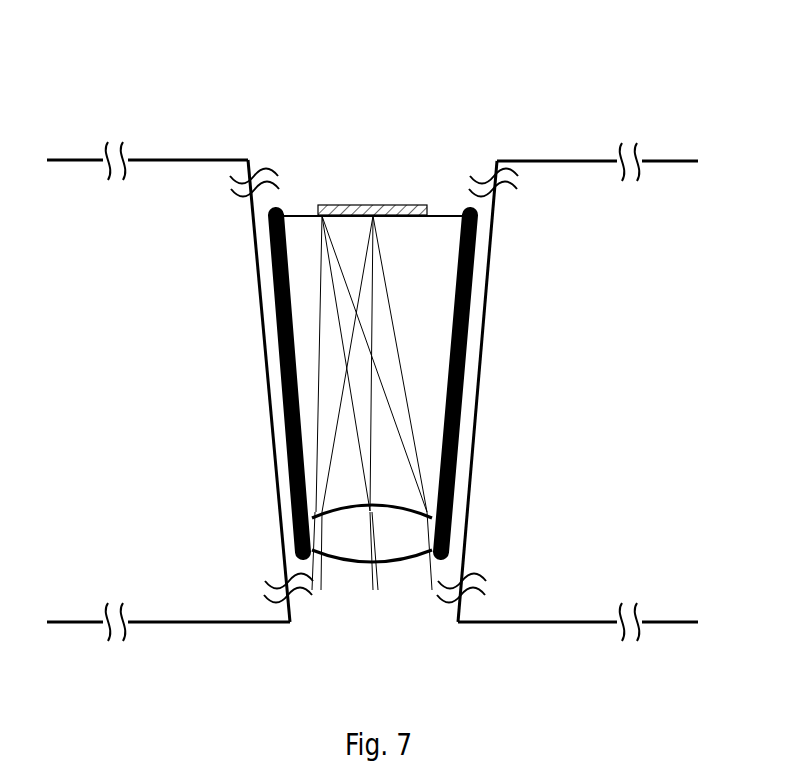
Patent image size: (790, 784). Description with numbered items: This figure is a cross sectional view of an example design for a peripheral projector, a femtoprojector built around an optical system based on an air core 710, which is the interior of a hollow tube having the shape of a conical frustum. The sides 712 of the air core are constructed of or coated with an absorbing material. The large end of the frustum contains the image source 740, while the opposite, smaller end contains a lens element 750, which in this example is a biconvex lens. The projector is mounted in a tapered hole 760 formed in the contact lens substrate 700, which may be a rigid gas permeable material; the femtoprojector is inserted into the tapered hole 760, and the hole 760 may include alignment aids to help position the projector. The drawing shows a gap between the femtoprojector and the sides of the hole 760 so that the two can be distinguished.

The contact lens substrate 700 is at (188, 406).
The tapered hole 760 is at (285, 165).
The sides of the air core 712 is at (467, 207).
The image source 740 is at (374, 205).
The air core 710 is at (435, 299).
The lens element 750 is at (413, 544).